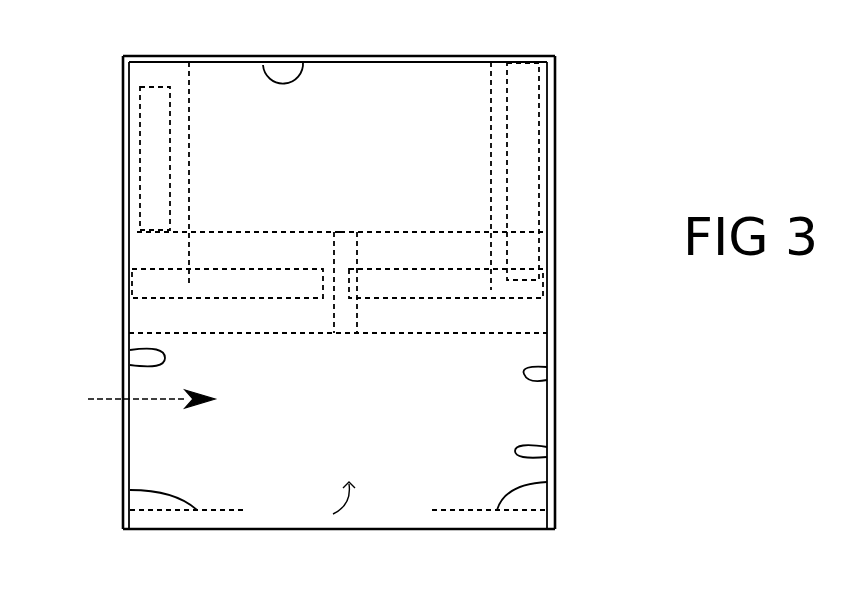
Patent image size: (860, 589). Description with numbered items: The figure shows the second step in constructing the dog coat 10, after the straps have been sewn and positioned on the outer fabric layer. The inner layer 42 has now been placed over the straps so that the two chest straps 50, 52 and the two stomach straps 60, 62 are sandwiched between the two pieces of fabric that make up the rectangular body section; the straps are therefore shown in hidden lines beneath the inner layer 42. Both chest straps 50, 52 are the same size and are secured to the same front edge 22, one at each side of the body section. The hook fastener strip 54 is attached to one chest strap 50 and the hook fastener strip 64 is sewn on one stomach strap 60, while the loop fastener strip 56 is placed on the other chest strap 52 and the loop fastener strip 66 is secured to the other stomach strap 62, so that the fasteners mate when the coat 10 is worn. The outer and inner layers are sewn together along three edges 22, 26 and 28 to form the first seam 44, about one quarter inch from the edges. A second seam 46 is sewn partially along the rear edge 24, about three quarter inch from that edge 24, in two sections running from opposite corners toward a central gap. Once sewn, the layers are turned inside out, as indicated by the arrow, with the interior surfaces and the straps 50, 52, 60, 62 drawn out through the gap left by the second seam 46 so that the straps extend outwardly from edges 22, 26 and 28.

The coat 10 is at (132, 399).
The front edge 22 is at (470, 55).
The rear edge 24 is at (538, 530).
The edge 26 is at (122, 464).
The edge 28 is at (547, 349).
The inner layer 42 is at (437, 401).
The first seam 44 is at (303, 62).
The second seam 46 is at (130, 490).
The chest strap 50 is at (547, 130).
The chest strap 52 is at (148, 74).
The hook fastener strip 54 is at (523, 174).
The loop fastener strip 56 is at (148, 120).
The stomach strap 60 is at (163, 252).
The stomach strap 62 is at (461, 249).
The hook fastener strip 64 is at (213, 289).
The loop fastener strip 66 is at (458, 290).